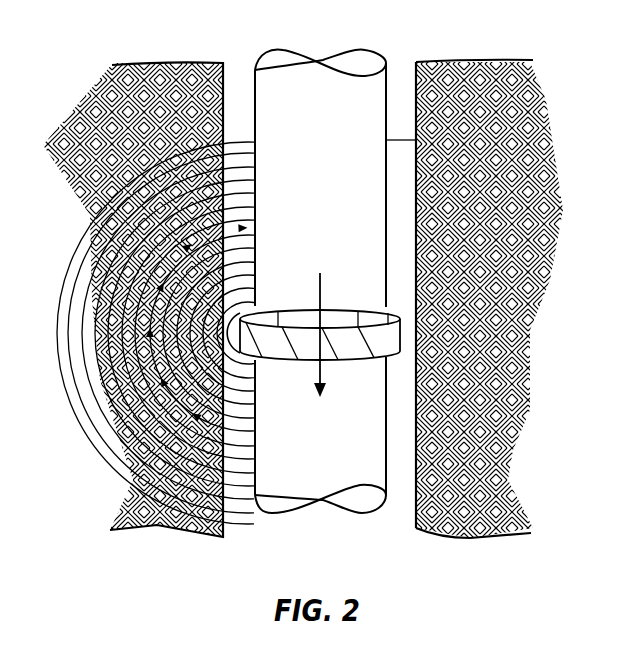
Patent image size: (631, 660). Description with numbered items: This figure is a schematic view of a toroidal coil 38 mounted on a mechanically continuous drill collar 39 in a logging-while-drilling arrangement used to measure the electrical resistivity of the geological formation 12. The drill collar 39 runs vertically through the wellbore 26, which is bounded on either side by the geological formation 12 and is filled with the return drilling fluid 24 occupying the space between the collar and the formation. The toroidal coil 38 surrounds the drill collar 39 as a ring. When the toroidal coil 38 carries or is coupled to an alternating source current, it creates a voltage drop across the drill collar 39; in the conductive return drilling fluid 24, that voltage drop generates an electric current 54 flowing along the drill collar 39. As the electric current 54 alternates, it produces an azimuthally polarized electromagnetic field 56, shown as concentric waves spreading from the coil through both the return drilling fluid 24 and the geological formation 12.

The geological formation 12 is at (145, 136).
The return drilling fluid 24 is at (240, 69).
The wellbore 26 is at (416, 268).
The toroidal coil 38 is at (400, 338).
The drill collar 39 is at (416, 138).
The electric current 54 is at (323, 380).
The azimuthally polarized electromagnetic field 56 is at (157, 307).